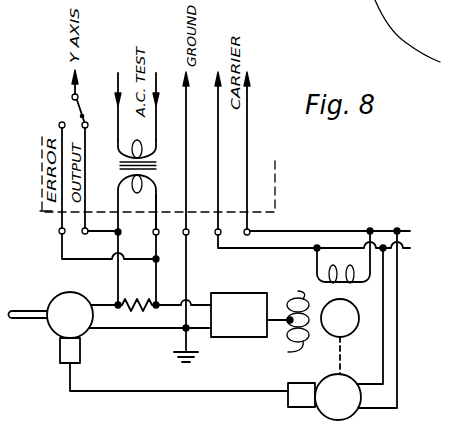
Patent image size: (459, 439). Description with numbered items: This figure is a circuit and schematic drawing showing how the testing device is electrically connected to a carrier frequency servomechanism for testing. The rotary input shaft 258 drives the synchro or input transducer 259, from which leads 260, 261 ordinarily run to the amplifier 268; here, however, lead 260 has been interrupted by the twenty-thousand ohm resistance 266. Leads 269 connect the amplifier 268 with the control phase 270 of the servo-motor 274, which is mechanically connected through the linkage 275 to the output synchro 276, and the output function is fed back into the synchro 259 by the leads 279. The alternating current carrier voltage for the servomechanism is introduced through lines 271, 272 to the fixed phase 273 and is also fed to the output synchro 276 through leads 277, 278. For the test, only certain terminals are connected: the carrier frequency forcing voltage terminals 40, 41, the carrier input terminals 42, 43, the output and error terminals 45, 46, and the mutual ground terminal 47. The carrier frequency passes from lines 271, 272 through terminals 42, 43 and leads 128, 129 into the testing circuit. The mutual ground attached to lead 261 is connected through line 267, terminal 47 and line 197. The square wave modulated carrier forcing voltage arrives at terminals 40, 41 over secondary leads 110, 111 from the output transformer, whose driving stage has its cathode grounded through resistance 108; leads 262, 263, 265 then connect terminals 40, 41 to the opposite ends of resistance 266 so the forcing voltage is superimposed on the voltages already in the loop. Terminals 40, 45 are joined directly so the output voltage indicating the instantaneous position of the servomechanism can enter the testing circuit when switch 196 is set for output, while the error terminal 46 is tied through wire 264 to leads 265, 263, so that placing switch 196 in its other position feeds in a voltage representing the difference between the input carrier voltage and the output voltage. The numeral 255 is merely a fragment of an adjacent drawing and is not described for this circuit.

The switch 196 is at (72, 99).
The cathode resistance 108 is at (156, 168).
The secondary lead 110 is at (118, 191).
The secondary lead 111 is at (158, 194).
The ground line 197 is at (187, 176).
The mutual ground terminal 47 is at (188, 230).
The carrier lead 128 is at (231, 163).
The carrier lead 129 is at (248, 125).
The carrier input terminal 42 is at (221, 231).
The carrier input terminal 43 is at (250, 230).
The error terminal 46 is at (58, 231).
The output terminal 45 is at (88, 233).
The carrier frequency forcing voltage terminal 40 is at (121, 233).
The carrier frequency forcing voltage terminal 41 is at (159, 234).
The wire 264 is at (60, 259).
The lead 265 is at (155, 259).
The lead 262 is at (118, 281).
The lead 263 is at (159, 281).
The ground line 267 is at (192, 284).
The synchro or input transducer 259 is at (70, 327).
The rotary input shaft 258 is at (25, 319).
The lead 260 is at (106, 289).
The lead 261 is at (104, 332).
The resistance 266 is at (140, 311).
The amplifier 268 is at (245, 284).
The leads 269 is at (279, 324).
The control phase 270 is at (294, 289).
The alternating current input line 271 is at (410, 232).
The alternating current input line 272 is at (410, 250).
The fixed phase 273 is at (372, 277).
The servo-motor 274 is at (340, 318).
The mechanical connection 275 is at (340, 371).
The output synchro 276 is at (338, 397).
The lead 277 is at (385, 313).
The lead 278 is at (397, 343).
The feedback leads 279 is at (178, 393).
The element of adjacent figure 255 is at (320, 5).